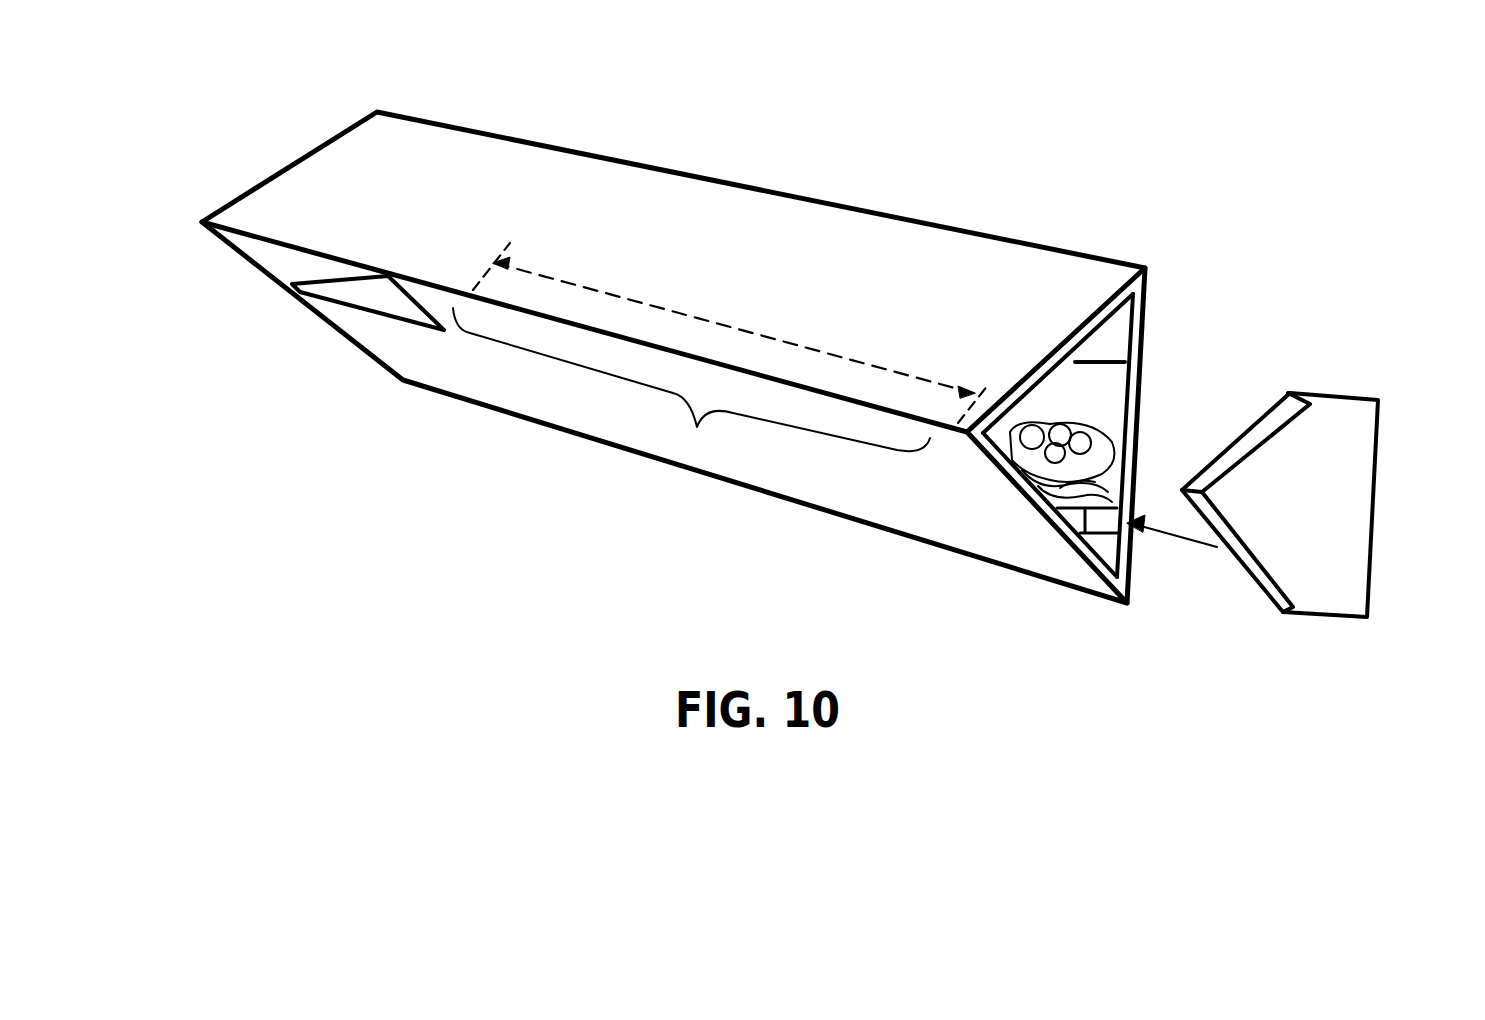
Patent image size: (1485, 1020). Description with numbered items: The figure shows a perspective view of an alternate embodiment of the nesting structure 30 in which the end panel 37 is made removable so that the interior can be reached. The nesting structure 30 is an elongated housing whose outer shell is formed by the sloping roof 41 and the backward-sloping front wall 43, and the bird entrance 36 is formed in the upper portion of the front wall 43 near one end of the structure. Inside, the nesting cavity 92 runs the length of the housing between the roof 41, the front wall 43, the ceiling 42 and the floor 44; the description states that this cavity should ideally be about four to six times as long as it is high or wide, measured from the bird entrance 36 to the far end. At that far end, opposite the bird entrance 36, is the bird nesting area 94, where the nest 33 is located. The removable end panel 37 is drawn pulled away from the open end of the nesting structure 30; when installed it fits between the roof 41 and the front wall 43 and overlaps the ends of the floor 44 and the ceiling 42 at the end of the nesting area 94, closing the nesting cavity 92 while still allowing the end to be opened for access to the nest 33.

The nesting structure 30 is at (1177, 232).
The roof 41 is at (360, 172).
The front wall 43 is at (835, 485).
The bird entrance 36 is at (333, 273).
The nesting cavity 92 is at (690, 432).
The ceiling 42 is at (1100, 347).
The nest 33 is at (1038, 495).
The floor 44 is at (1087, 535).
The bird nesting area 94 is at (1055, 440).
The end panel 37 is at (1328, 533).